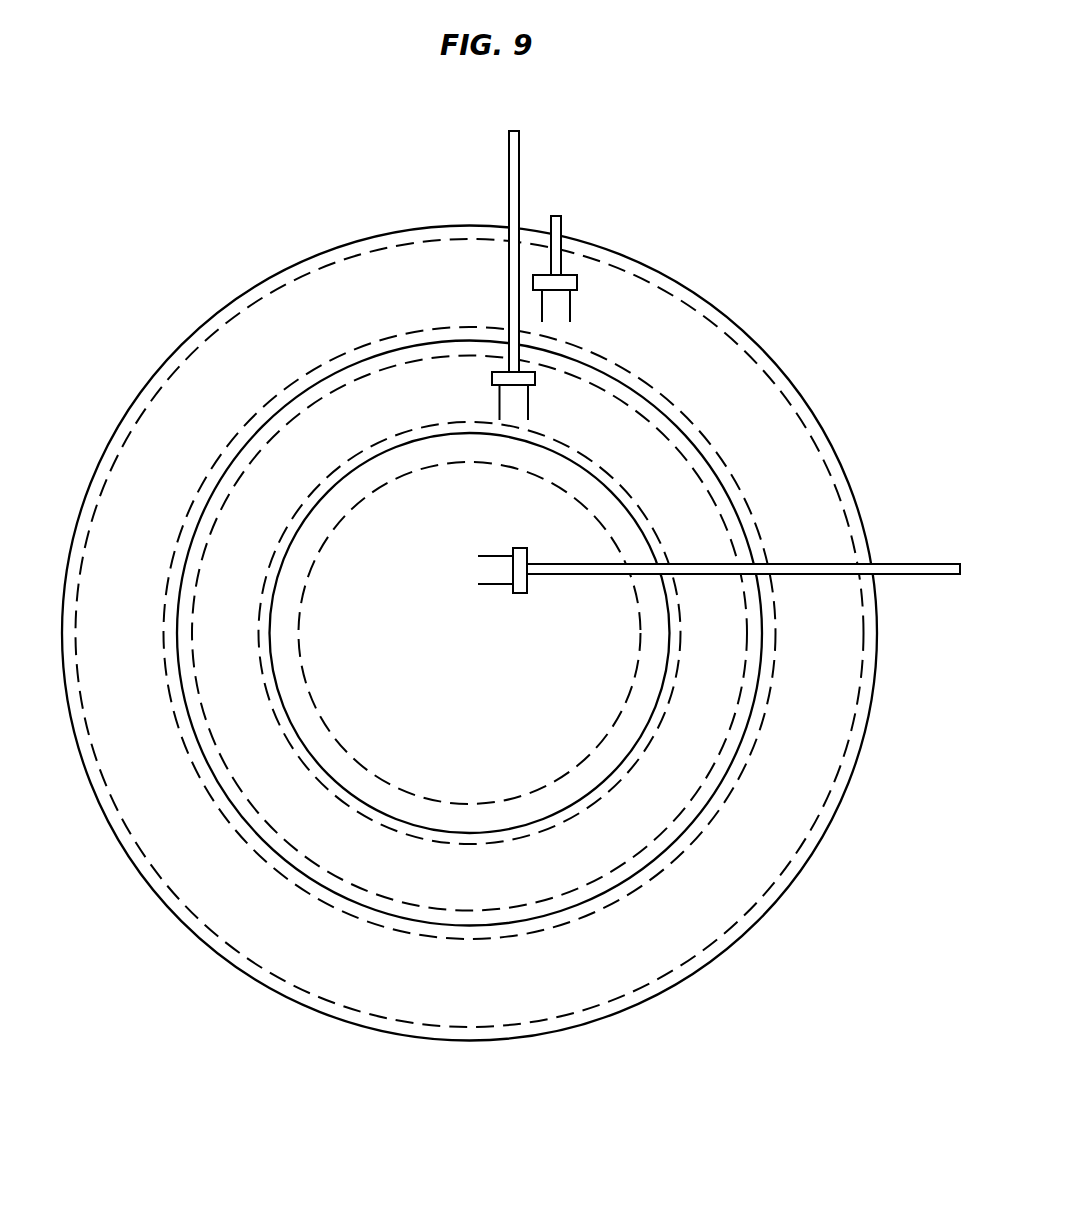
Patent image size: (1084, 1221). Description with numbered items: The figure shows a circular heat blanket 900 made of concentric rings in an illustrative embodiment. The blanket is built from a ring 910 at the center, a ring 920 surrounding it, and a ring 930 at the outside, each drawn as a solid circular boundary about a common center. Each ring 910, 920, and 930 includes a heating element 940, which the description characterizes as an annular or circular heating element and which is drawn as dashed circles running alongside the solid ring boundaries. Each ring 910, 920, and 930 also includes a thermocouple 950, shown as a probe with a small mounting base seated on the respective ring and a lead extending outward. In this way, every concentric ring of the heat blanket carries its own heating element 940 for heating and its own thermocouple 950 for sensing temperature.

The system 900 is at (800, 139).
The ring 910 is at (572, 460).
The ring 920 is at (764, 657).
The ring 930 is at (89, 488).
The heating element 940 is at (674, 444).
The thermocouple 950 is at (519, 160).